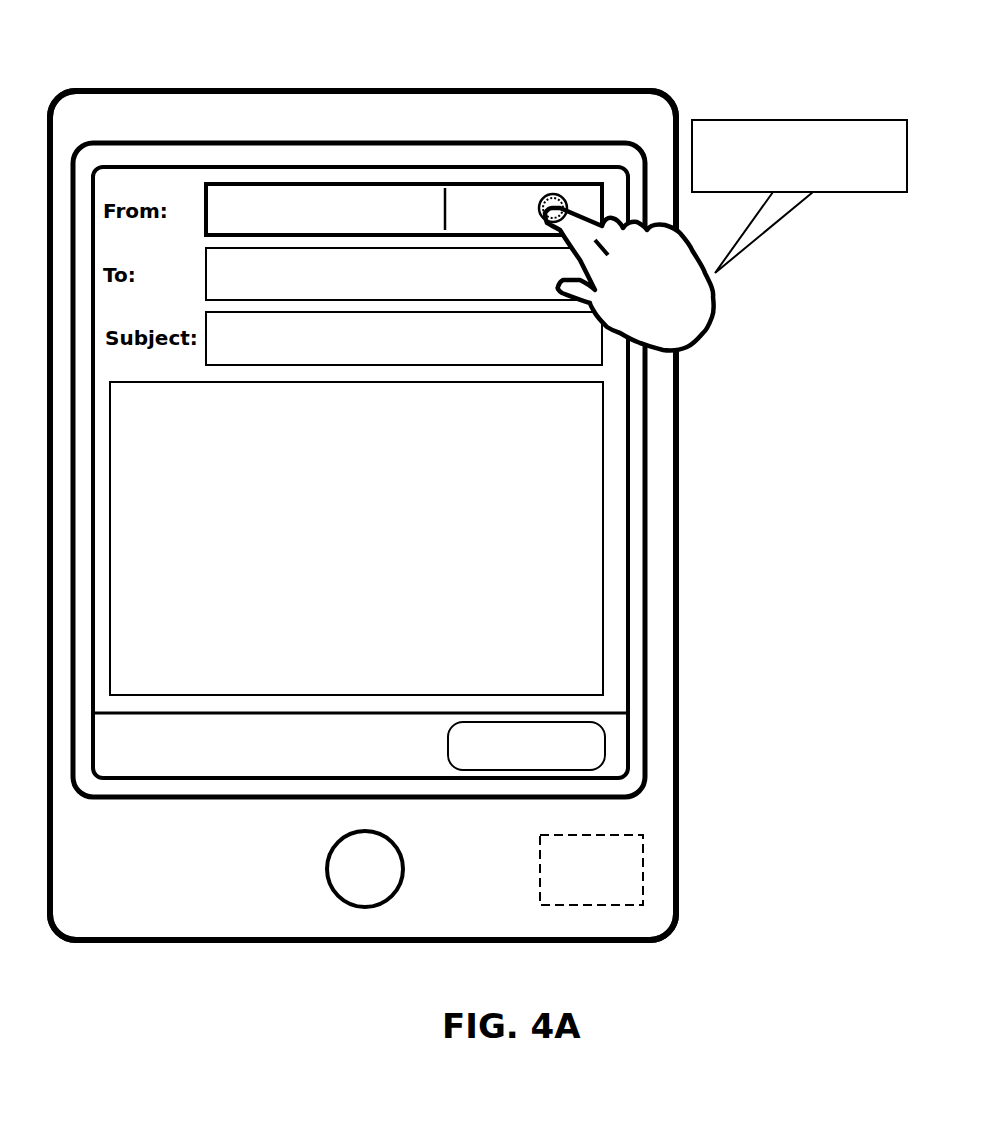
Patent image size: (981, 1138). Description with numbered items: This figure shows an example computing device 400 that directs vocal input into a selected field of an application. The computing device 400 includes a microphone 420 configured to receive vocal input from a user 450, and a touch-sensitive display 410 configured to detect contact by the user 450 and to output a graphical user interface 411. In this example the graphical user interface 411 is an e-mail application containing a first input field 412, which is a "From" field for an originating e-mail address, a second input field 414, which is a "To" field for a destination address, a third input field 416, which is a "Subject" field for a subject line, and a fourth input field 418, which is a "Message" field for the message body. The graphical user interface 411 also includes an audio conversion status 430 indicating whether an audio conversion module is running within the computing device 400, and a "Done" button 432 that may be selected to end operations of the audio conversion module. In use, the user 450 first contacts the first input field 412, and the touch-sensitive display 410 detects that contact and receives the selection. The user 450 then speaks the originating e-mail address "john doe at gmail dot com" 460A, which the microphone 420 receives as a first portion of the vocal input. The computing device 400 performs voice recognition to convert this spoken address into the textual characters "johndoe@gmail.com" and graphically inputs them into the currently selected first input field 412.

The computing device 400 is at (537, 90).
The touch-sensitive display 410 is at (648, 687).
The graphical user interface 411 is at (628, 583).
The first input field 412 is at (205, 218).
The second input field 414 is at (205, 273).
The third input field 416 is at (205, 325).
The fourth input field 418 is at (602, 472).
The microphone 420 is at (592, 905).
The audio conversion status 430 is at (317, 752).
The Done button 432 is at (513, 770).
The user 450 is at (713, 315).
The originating e-mail address "john doe at gmail dot com" 460A is at (767, 120).